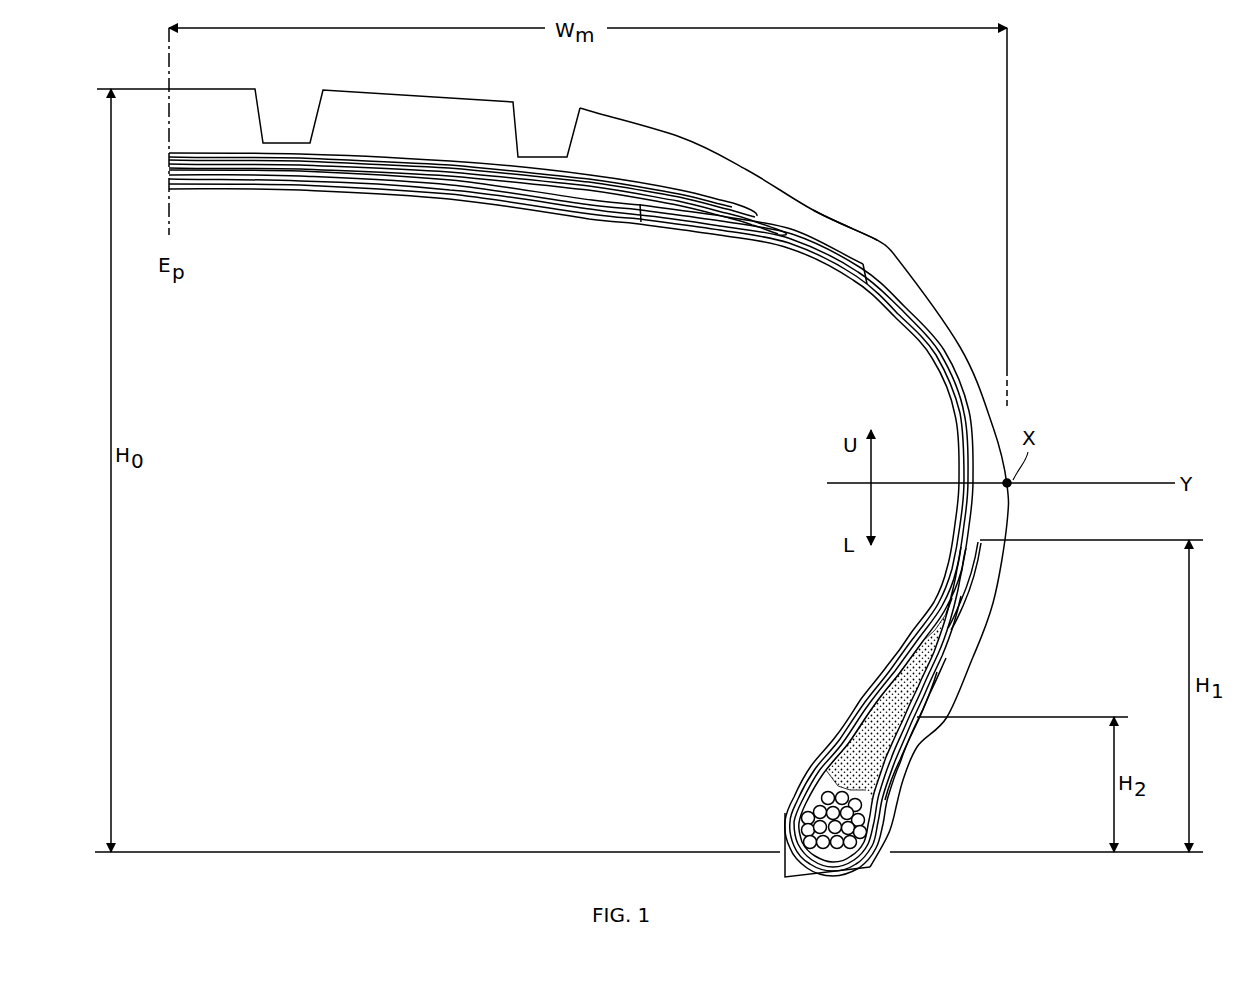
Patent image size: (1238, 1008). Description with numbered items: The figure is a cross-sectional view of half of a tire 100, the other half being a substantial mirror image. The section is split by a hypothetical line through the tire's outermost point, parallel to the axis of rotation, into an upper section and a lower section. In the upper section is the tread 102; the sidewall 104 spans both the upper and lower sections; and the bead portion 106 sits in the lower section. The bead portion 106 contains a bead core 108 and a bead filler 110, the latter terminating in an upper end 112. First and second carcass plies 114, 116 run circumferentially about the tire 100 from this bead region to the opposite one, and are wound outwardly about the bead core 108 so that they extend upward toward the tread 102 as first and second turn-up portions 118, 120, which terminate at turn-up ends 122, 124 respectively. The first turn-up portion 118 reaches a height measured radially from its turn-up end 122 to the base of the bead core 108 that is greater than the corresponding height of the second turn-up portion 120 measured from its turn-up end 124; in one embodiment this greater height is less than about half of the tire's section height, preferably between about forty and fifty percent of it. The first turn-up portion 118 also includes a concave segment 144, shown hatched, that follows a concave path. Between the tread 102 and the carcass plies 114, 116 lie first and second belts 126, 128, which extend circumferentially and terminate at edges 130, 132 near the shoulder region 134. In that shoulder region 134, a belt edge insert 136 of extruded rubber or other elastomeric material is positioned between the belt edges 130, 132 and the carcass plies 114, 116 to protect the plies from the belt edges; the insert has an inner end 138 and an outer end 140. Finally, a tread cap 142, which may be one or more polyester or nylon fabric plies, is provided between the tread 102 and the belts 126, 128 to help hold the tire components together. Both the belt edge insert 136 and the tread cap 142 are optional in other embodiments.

The tire 100 is at (1040, 200).
The tread 102 is at (465, 95).
The sidewall 104 is at (988, 375).
The bead portion 106 is at (785, 748).
The bead core 108 is at (796, 806).
The bead filler 110 is at (850, 755).
The upper end 112 is at (957, 587).
The first carcass ply 114 is at (290, 190).
The second carcass ply 116 is at (465, 193).
The first turn-up portion 118 is at (950, 638).
The second turn-up portion 120 is at (870, 737).
The turn-up end 122 is at (978, 542).
The turn-up end 124 is at (883, 746).
The first belt 126 is at (253, 165).
The second belt 128 is at (413, 165).
The edge 130 is at (757, 205).
The edge 132 is at (775, 222).
The shoulder region 134 is at (825, 165).
The belt edge insert 136 is at (777, 232).
The inner end 138 is at (640, 210).
The outer end 140 is at (856, 285).
The tread cap 142 is at (650, 180).
The concave segment 144 is at (920, 703).